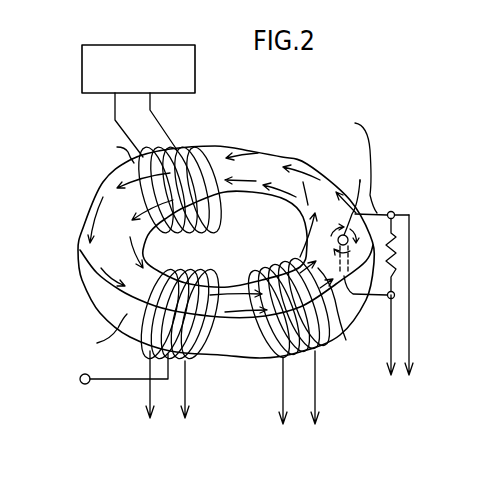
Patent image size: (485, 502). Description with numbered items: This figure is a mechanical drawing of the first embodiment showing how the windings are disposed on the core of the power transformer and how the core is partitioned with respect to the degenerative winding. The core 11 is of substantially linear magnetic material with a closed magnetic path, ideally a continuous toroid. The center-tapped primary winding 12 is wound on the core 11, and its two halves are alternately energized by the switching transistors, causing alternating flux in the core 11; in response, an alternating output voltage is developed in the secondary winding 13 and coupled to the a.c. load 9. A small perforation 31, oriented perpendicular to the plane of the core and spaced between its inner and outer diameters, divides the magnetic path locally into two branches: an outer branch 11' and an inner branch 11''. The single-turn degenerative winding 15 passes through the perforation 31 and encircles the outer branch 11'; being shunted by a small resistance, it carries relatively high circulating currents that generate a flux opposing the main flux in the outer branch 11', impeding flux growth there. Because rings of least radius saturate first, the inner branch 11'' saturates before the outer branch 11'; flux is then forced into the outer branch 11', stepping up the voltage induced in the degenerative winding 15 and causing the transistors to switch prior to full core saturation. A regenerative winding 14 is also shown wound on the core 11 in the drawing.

The a.c. load 9 is at (143, 45).
The core 11 is at (310, 242).
The outer branch 11' is at (354, 170).
The inner branch 11'' is at (298, 243).
The primary winding 12 is at (193, 276).
The secondary winding 13 is at (190, 143).
The regenerative winding 14 is at (263, 277).
The degenerative winding 15 is at (328, 232).
The perforation 31 is at (343, 236).